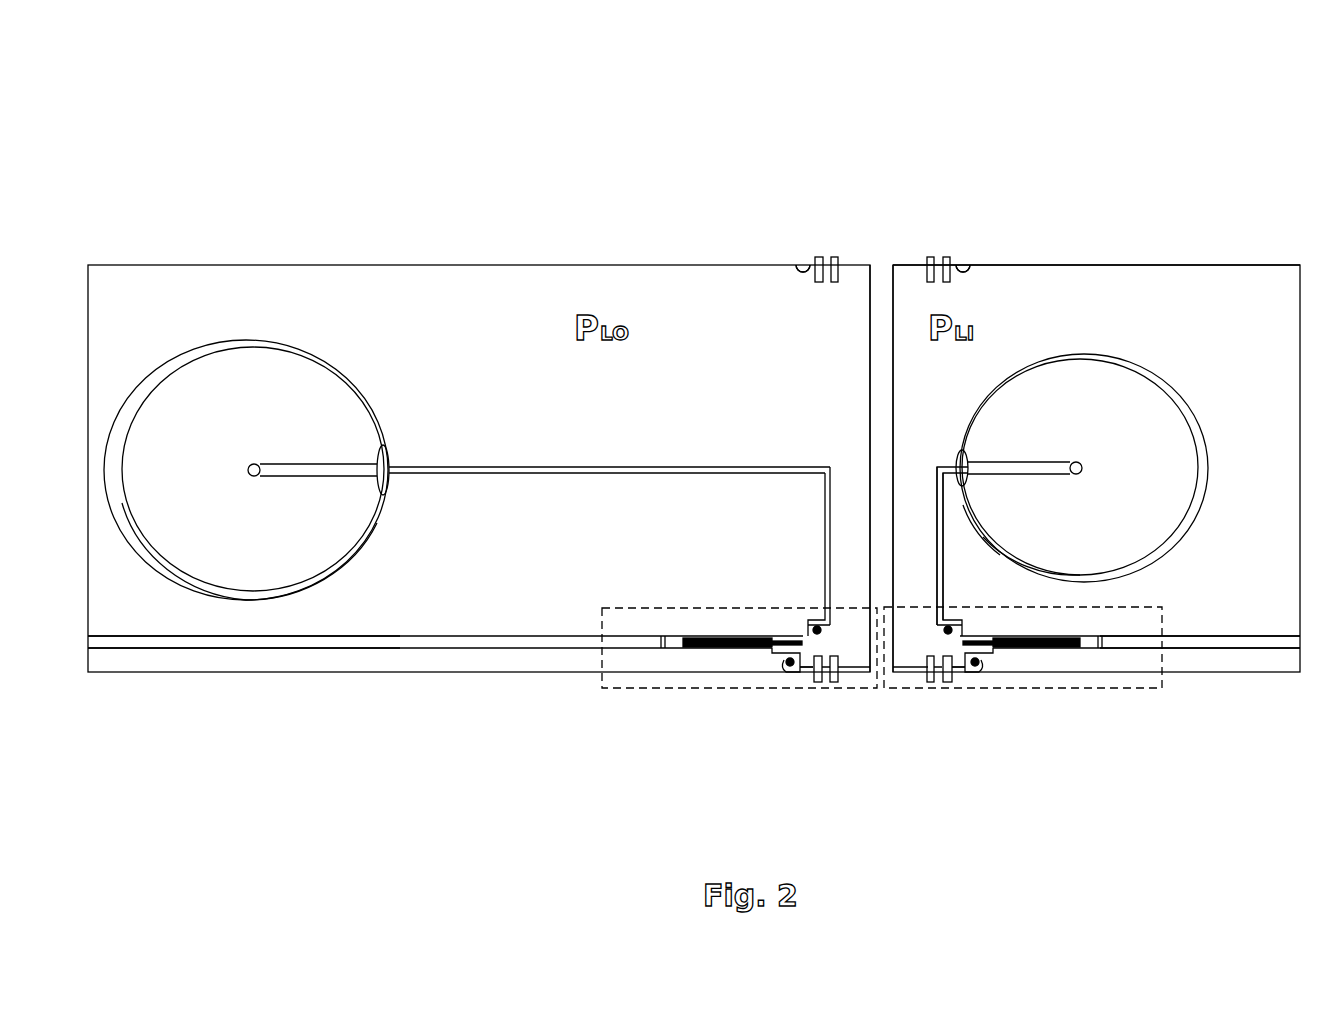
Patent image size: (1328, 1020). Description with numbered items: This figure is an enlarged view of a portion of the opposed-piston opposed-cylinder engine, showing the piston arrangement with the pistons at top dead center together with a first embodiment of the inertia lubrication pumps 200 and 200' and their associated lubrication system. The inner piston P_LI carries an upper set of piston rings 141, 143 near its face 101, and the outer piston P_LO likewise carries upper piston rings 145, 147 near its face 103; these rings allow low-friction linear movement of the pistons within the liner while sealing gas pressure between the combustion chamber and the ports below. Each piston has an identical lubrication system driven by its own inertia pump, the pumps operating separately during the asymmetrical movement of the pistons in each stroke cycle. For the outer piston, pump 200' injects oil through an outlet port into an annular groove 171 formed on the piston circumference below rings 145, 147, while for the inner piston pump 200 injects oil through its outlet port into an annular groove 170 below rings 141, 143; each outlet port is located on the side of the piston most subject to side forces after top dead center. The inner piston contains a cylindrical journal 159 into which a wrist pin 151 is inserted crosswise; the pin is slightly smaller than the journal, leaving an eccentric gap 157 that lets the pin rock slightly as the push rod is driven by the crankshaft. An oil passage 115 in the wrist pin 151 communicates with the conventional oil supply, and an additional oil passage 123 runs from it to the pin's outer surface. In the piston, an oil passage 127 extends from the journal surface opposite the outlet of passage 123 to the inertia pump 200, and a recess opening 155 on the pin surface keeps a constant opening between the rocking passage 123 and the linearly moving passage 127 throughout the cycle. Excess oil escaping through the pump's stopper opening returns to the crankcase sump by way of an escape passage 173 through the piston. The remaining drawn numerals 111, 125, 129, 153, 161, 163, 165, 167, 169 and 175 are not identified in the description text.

The face of inner piston 101 is at (893, 312).
The face of outer piston 103 is at (872, 346).
The first rotor hub 111 is at (254, 465).
The oil passage 115 is at (1077, 462).
The additional oil passage 123 is at (988, 470).
The first shaft 125 is at (335, 470).
The oil passage 127 is at (937, 505).
The first conduit 129 is at (443, 472).
The piston ring 141 is at (932, 257).
The piston ring 143 is at (945, 257).
The piston ring 145 is at (838, 257).
The piston ring 147 is at (820, 257).
The wrist pin 151 is at (1173, 403).
The second rotor inner ring 153 is at (983, 537).
The recess opening 155 is at (967, 450).
The eccentric gap 157 is at (1205, 473).
The cylindrical journal 159 is at (963, 505).
The first rotor outer ring 161 is at (155, 388).
The first rotor rim 163 is at (377, 523).
The first seal 165 is at (389, 443).
The first rotor lower rim 167 is at (122, 503).
The first rotor inner ring 169 is at (372, 403).
The annular groove 170 is at (966, 265).
The annular groove 171 is at (801, 265).
The escape passage 173 is at (1253, 642).
The first lower conduit 175 is at (440, 642).
The inertia lubrication pump 200 is at (1023, 695).
The inertia lubrication pump 200' is at (710, 692).